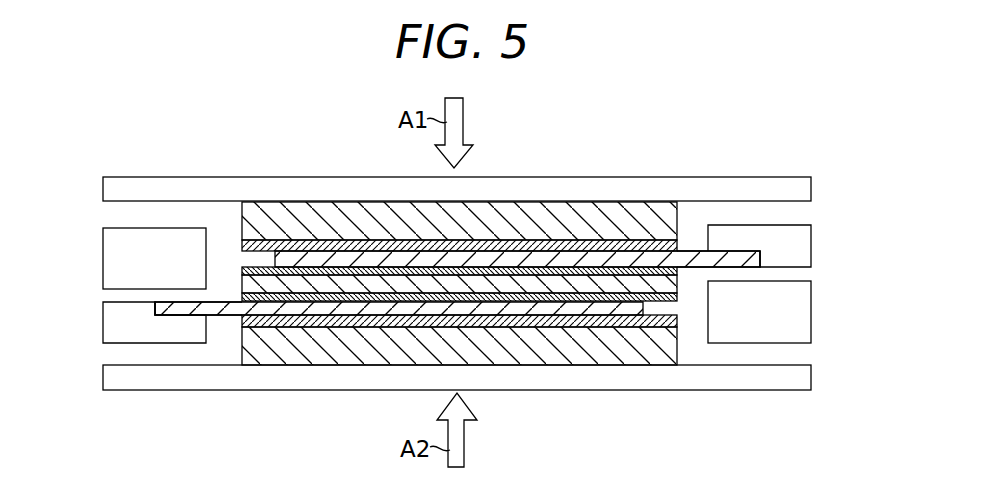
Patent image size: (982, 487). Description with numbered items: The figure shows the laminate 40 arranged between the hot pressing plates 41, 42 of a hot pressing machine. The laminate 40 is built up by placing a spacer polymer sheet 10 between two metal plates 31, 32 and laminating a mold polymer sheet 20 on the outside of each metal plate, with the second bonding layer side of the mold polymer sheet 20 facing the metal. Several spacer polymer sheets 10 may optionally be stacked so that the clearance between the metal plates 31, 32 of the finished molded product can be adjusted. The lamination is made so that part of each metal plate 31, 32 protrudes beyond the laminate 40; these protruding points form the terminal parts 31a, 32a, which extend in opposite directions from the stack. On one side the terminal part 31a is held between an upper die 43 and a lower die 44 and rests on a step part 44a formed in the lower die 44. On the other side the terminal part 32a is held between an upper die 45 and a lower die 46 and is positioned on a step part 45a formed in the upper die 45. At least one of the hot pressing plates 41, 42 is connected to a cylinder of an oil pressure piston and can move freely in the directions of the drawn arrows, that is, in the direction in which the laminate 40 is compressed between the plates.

The spacer polymer sheet 10 is at (471, 287).
The mold polymer sheet 20 is at (678, 213).
The metal plate 31 is at (333, 307).
The terminal part 31a is at (173, 302).
The metal plate 32 is at (607, 258).
The terminal part 32a is at (723, 268).
The laminate 40 is at (457, 288).
The hot pressing plate 41 is at (547, 177).
The hot pressing plate 42 is at (550, 378).
The upper die 43 is at (120, 257).
The lower die 44 is at (120, 325).
The step part 44a is at (192, 315).
The upper die 45 is at (796, 243).
The step part 45a is at (760, 256).
The lower die 46 is at (796, 309).